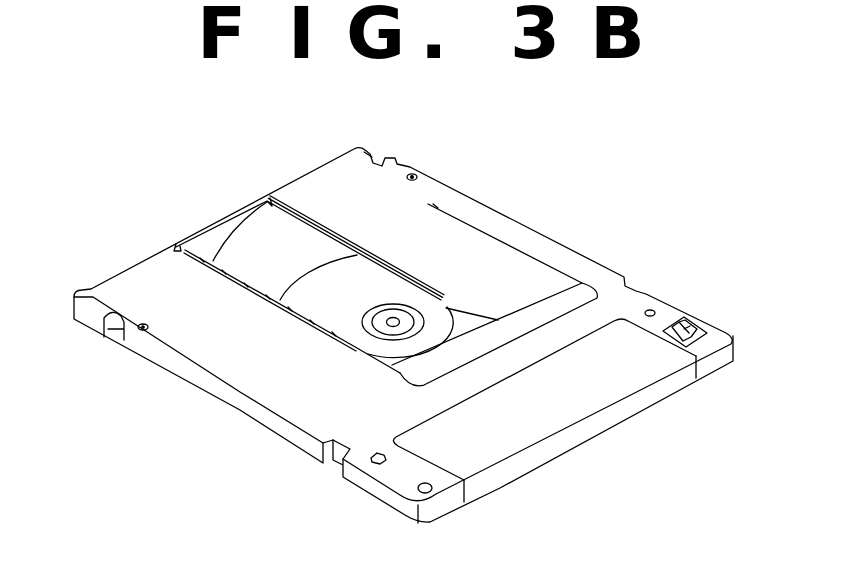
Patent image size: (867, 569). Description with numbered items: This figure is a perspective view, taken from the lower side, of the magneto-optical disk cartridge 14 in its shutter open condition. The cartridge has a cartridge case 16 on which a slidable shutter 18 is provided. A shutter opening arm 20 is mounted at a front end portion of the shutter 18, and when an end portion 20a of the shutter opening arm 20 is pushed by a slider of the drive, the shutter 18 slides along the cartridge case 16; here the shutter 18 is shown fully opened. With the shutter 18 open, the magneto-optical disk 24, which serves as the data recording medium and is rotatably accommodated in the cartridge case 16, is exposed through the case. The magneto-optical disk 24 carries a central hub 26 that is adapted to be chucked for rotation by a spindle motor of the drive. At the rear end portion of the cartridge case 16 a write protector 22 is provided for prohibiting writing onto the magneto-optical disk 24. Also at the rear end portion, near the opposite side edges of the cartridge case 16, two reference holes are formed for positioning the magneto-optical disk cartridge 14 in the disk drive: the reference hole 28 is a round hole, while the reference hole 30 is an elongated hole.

The magneto-optical disk cartridge 14 is at (560, 219).
The cartridge case 16 is at (446, 211).
The shutter 18 is at (328, 181).
The shutter opening arm 20 is at (212, 237).
The end portion of the shutter opening arm 20a is at (176, 246).
The write protector 22 is at (686, 324).
The magneto-optical disk 24 is at (287, 241).
The central hub 26 is at (446, 303).
The reference hole 28 is at (650, 309).
The reference hole 30 is at (382, 462).